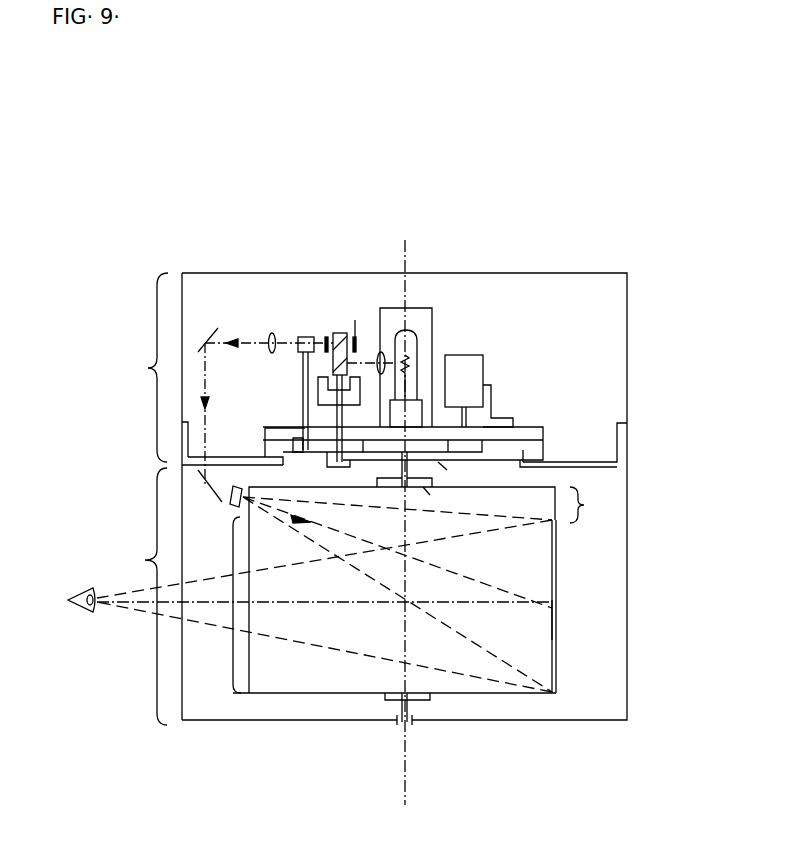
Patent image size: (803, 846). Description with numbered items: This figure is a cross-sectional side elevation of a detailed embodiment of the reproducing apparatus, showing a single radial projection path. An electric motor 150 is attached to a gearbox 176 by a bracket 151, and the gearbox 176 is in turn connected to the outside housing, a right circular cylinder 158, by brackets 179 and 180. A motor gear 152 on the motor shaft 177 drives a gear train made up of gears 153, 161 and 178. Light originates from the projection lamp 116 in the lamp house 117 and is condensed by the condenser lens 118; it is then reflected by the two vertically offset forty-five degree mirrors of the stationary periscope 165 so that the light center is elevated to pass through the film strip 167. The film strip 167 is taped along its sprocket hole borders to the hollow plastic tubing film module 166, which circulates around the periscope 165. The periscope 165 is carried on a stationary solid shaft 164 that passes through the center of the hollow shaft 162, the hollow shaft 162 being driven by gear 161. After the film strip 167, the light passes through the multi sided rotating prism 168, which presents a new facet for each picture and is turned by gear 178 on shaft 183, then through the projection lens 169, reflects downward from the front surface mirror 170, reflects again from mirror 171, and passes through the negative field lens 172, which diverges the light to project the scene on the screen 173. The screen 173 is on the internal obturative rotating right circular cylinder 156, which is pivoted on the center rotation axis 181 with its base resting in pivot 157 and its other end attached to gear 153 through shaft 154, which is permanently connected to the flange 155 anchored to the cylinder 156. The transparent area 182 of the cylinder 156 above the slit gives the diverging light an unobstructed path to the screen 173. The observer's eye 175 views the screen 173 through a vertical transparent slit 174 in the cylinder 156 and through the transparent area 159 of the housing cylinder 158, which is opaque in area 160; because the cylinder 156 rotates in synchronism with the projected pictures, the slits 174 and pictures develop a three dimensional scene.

The projection lamp 116 is at (412, 328).
The lamp house 117 is at (432, 327).
The condenser lens 118 is at (380, 352).
The electric motor 150 is at (485, 358).
The bracket 151 is at (491, 386).
The motor gear 152 is at (482, 440).
The gear 153 is at (438, 462).
The shaft 154 is at (407, 487).
The flange 155 is at (423, 487).
The internal obturative rotating right circular cylinder 156 is at (480, 695).
The pivot 157 is at (400, 727).
The outside housing 158 is at (572, 724).
The transparent area 159 is at (143, 558).
The opaque area 160 is at (148, 368).
The gear 161 is at (323, 450).
The hollow shaft 162 is at (305, 438).
The stationary solid shaft 164 is at (337, 467).
The stationary periscope 165 is at (342, 333).
The film module 166 is at (334, 333).
The film strip 167 is at (327, 337).
The multi sided rotating prism 168 is at (309, 337).
The projection lens 169 is at (274, 333).
The front surface mirror 170 is at (216, 328).
The mirror 171 is at (200, 478).
The negative field lens 172 is at (232, 508).
The screen 173 is at (550, 620).
The vertical transparent slit 174 is at (232, 650).
The eye 175 is at (87, 607).
The gearbox 176 is at (482, 452).
The motor shaft 177 is at (465, 417).
The gear 178 is at (295, 445).
The bracket 179 is at (185, 422).
The bracket 180 is at (607, 467).
The center rotation axis 181 is at (403, 620).
The transparent area 182 is at (590, 505).
The shaft 183 is at (300, 385).